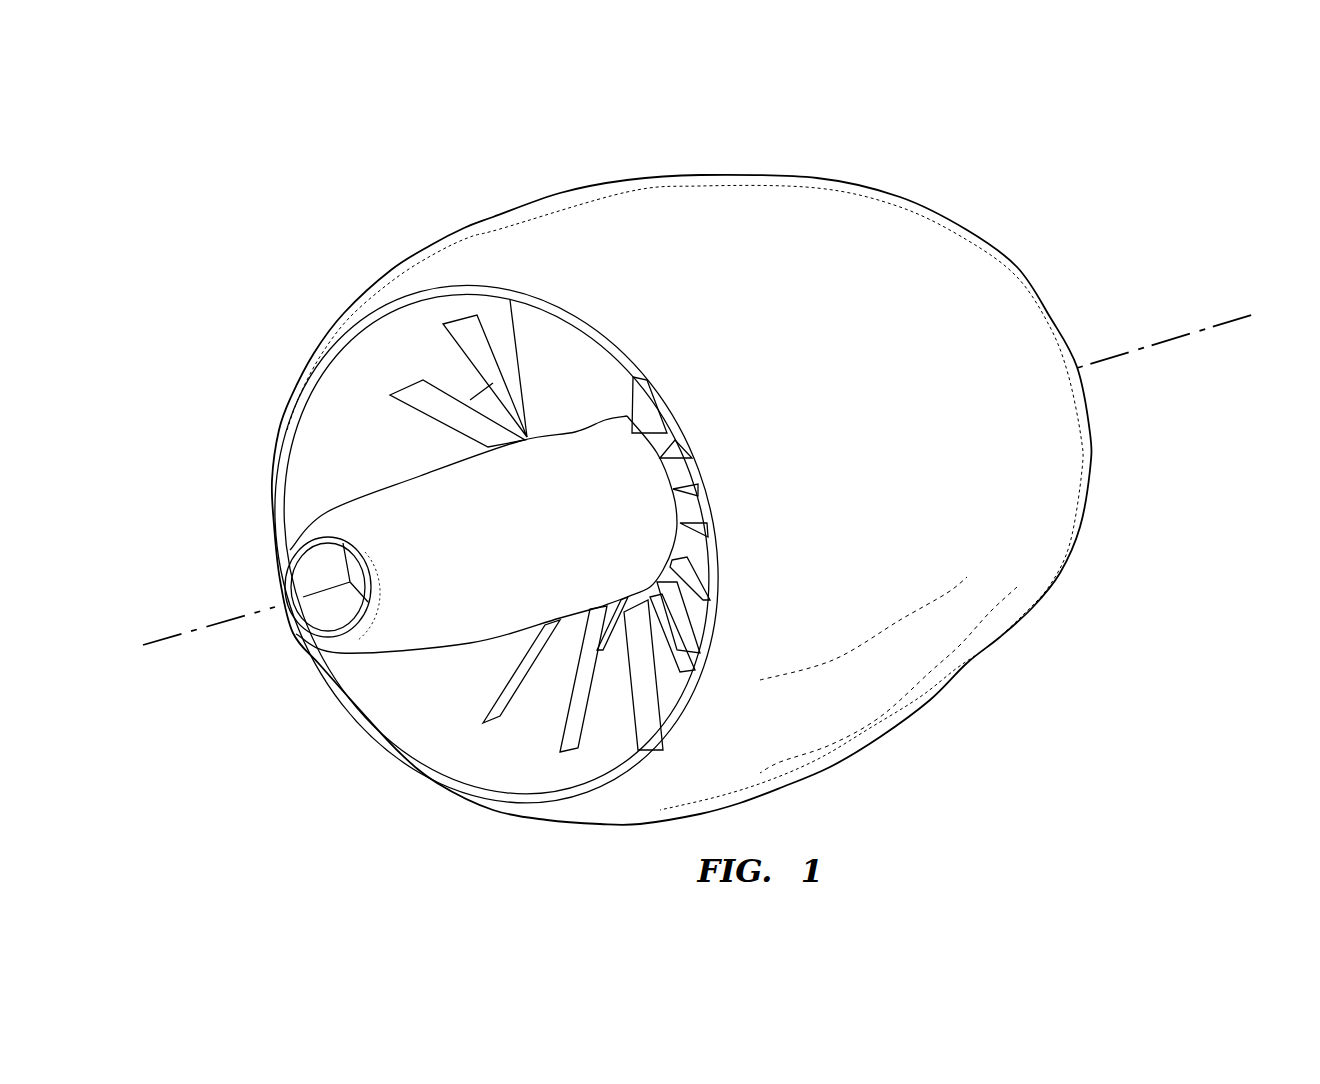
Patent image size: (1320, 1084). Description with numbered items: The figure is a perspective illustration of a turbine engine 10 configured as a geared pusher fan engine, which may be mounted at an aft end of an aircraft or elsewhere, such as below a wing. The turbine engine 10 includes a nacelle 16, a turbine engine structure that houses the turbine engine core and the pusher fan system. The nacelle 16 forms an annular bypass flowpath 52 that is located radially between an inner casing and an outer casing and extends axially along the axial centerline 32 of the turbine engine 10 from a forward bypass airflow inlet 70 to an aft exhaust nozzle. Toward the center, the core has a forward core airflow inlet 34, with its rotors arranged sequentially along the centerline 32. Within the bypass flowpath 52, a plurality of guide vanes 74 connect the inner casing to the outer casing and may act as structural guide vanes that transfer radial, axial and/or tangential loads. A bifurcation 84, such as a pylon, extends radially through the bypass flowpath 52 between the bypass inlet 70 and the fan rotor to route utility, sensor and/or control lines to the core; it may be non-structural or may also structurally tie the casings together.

The turbine engine 10 is at (700, 495).
The nacelle 16 is at (817, 180).
The axial centerline 32 is at (1165, 345).
The forward core airflow inlet 34 is at (297, 623).
The annular bypass flowpath 52 is at (394, 707).
The forward bypass airflow inlet 70 is at (455, 768).
The guide vanes 74 is at (645, 740).
The bifurcation 84 is at (533, 371).